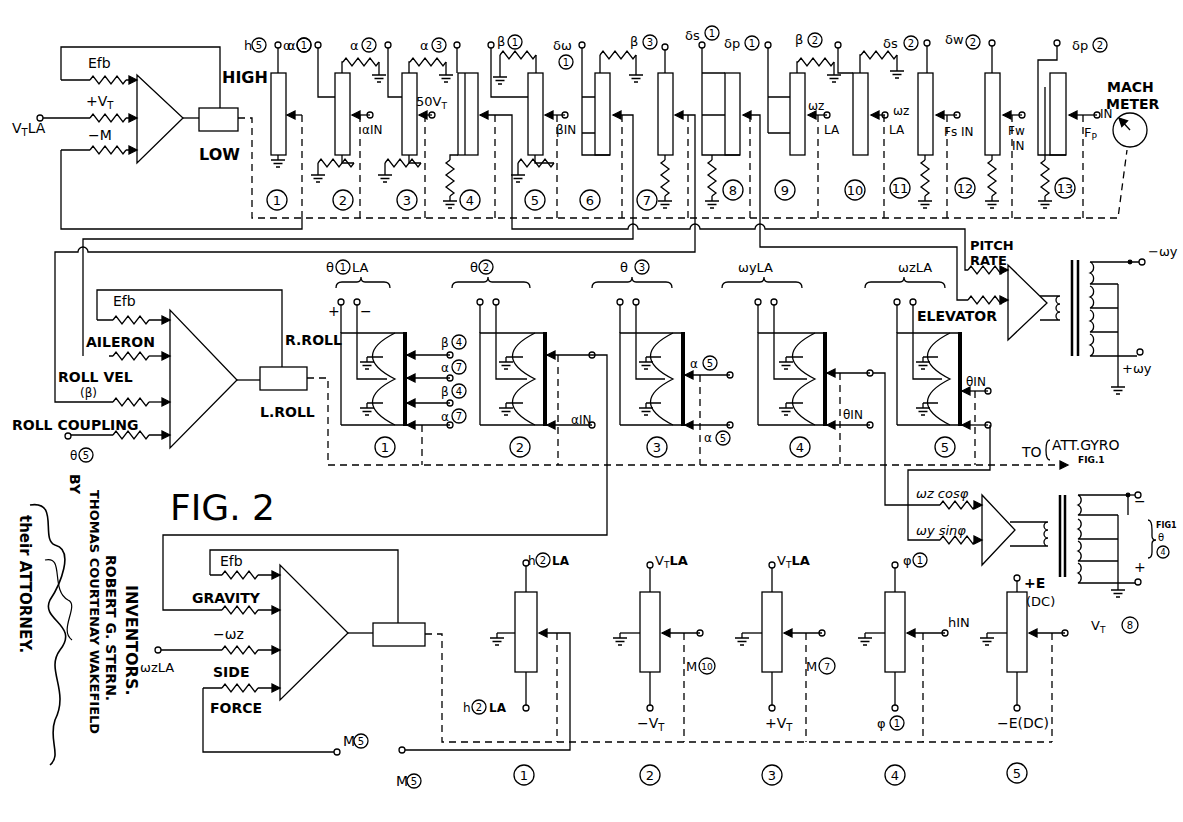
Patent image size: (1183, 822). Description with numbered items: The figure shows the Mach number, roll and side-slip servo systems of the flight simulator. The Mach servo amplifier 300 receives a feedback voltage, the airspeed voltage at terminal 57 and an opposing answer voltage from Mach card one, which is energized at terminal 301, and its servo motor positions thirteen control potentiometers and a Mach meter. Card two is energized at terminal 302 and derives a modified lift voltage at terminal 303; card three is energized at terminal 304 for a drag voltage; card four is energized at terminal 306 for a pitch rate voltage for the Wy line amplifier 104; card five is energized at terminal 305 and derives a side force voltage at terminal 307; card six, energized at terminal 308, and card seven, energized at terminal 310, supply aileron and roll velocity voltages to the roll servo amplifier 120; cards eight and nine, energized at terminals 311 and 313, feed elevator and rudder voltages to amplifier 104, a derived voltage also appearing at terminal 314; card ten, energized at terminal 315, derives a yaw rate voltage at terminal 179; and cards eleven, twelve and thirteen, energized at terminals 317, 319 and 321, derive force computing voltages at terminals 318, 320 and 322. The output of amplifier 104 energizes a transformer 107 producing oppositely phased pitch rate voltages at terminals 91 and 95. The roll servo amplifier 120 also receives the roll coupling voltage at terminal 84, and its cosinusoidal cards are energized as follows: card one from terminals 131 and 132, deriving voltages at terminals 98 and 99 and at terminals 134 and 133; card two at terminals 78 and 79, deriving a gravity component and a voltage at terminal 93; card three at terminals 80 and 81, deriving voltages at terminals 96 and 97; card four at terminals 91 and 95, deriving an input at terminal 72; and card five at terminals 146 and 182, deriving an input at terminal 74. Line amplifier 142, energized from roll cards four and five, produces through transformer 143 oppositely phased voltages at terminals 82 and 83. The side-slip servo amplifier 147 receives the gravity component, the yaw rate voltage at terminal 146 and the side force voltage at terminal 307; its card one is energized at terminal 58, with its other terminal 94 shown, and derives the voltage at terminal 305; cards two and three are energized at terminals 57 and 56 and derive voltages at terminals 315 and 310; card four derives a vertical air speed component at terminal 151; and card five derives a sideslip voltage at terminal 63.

The servo amplifier 300 is at (147, 92).
The terminal 301 is at (284, 34).
The terminal 302 is at (326, 34).
The terminal 303 is at (372, 108).
The terminal 304 is at (396, 34).
The terminal 305 is at (497, 34).
The terminal 306 is at (462, 34).
The terminal 307 is at (569, 108).
The terminal 308 is at (590, 33).
The terminal 310 is at (676, 33).
The terminal 311 is at (701, 49).
The terminal 313 is at (774, 33).
The omega-z LA wiper terminal 314 is at (829, 111).
The terminal 315 is at (843, 33).
The terminal 317 is at (928, 40).
The terminal 318 is at (958, 111).
The terminal 319 is at (993, 40).
The terminal 320 is at (1023, 111).
The terminal 321 is at (1060, 41).
The terminal 322 is at (1097, 111).
The terminal 179 is at (886, 111).
The terminal 57 is at (39, 114).
The roll servo amplifier 120 is at (192, 344).
The terminal 131 is at (338, 300).
The terminal 132 is at (362, 296).
The terminal 134 is at (892, 705).
The terminal 98 is at (430, 371).
The terminal 133 is at (892, 568).
The terminal 99 is at (430, 419).
The terminal 79 is at (479, 299).
The terminal 78 is at (498, 299).
The terminal 93 is at (594, 421).
The terminal 81 is at (619, 299).
The terminal 80 is at (638, 299).
The terminal 97 is at (731, 371).
The terminal 96 is at (729, 422).
The terminal 91 is at (757, 301).
The terminal 95 is at (776, 299).
The terminal 72 is at (871, 421).
The terminal 182 is at (894, 302).
The terminal 146 is at (915, 299).
The terminal 74 is at (989, 387).
The Wy line amplifier 104 is at (1022, 280).
The transformer 107 is at (1074, 262).
The side-slip servo amplifier 147 is at (311, 606).
The terminal 84 is at (66, 439).
The terminal 58 is at (522, 566).
The h(2) terminal 94 is at (522, 706).
The terminal 56 is at (649, 705).
The terminal 63 is at (1067, 631).
The terminal 83 is at (1138, 491).
The terminal 82 is at (1138, 586).
The line amplifier 142 is at (986, 516).
The transformer 143 is at (1066, 496).
The terminal 151 is at (944, 630).